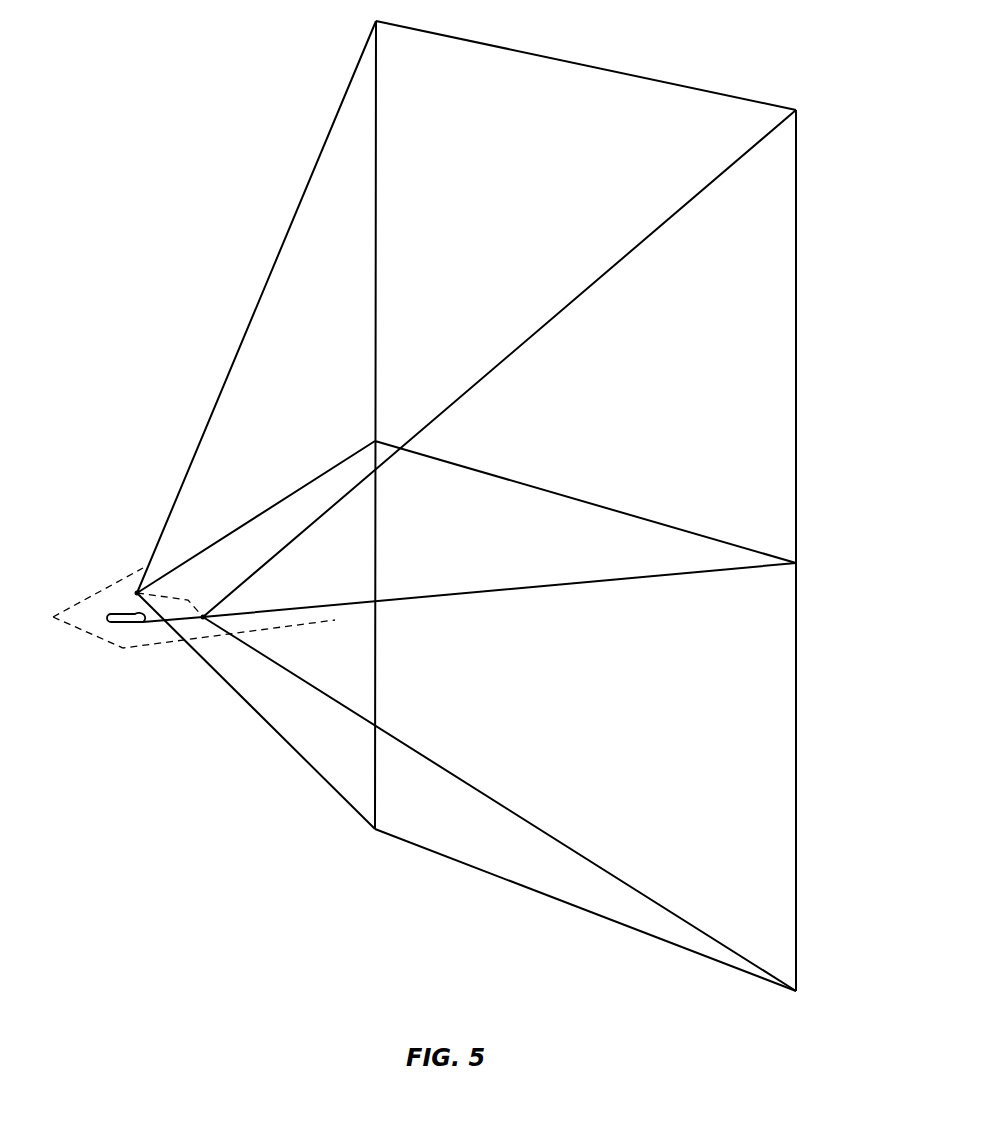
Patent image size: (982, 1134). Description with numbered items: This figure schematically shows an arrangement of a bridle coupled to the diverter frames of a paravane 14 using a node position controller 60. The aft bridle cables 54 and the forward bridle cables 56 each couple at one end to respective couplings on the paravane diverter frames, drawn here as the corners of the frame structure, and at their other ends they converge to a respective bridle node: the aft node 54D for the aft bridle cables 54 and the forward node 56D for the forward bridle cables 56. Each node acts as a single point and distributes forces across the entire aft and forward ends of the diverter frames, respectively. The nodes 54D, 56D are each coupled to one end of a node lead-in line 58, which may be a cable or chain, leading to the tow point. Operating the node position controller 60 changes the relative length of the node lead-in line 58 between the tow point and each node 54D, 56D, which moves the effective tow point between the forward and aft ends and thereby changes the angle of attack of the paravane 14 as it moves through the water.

The paravane 14 is at (808, 292).
The aft bridle cables 54 is at (262, 300).
The forward bridle cables 56 is at (566, 306).
The aft node 54D is at (137, 593).
The forward node 56D is at (202, 632).
The node lead-in line 58 is at (144, 626).
The node position controller 60 is at (68, 660).